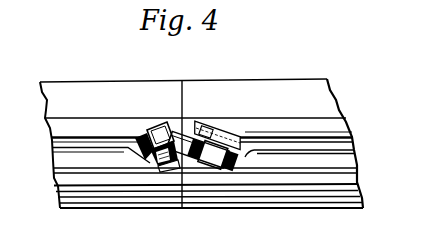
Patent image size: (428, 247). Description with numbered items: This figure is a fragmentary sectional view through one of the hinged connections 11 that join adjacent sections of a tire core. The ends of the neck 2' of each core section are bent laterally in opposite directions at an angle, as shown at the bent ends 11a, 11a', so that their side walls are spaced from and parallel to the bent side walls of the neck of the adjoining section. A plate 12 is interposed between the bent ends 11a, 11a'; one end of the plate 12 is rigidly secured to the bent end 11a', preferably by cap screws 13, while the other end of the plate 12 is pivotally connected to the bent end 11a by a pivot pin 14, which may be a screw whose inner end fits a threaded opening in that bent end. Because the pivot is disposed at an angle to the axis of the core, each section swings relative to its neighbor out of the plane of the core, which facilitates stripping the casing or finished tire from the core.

The neck 2' is at (208, 143).
The hinged connection 11 is at (211, 113).
The bent end 11a is at (161, 175).
The bent end 11a' is at (221, 114).
The plate 12 is at (214, 169).
The cap screw 13 is at (233, 138).
The pivot pin 14 is at (160, 124).